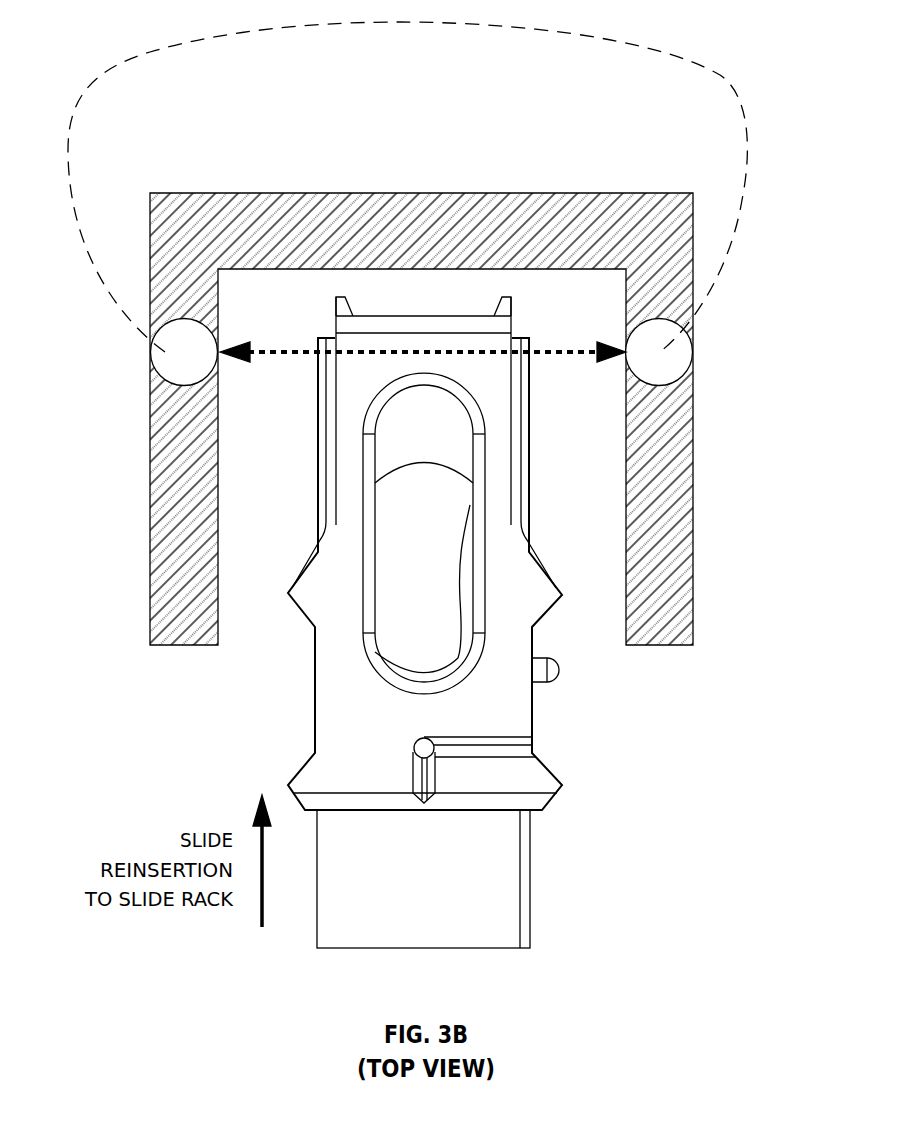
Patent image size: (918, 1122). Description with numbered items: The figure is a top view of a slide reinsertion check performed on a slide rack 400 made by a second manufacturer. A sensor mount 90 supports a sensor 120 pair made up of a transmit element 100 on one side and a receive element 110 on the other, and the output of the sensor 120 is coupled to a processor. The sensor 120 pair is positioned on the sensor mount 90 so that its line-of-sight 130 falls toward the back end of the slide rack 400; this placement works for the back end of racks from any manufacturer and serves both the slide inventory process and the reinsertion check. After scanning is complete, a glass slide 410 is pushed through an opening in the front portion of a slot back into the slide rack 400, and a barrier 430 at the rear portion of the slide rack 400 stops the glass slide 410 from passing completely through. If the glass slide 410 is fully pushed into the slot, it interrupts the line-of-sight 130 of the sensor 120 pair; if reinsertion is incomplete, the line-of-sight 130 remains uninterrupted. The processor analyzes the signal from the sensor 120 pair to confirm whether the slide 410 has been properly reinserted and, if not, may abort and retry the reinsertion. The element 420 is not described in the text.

The sensor mount 90 is at (229, 192).
The transmit element 100 is at (150, 352).
The receive element 110 is at (693, 352).
The sensor 120 is at (402, 27).
The line-of-sight 130 is at (310, 354).
The slide rack 400 is at (568, 790).
The glass slide 410 is at (493, 907).
The microscope slide 420 is at (521, 333).
The barrier 430 is at (341, 297).